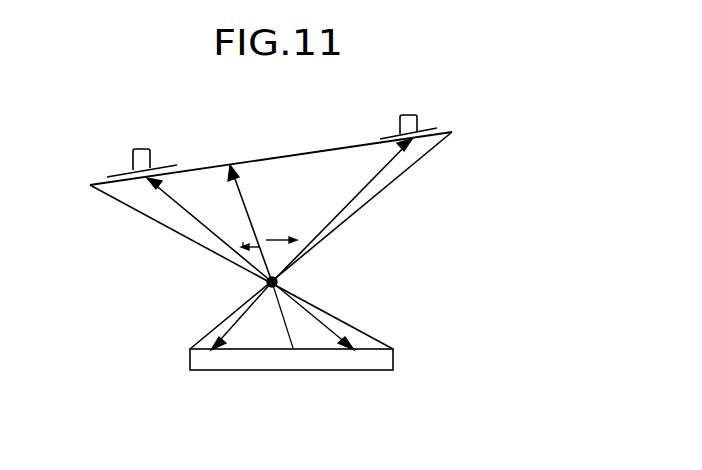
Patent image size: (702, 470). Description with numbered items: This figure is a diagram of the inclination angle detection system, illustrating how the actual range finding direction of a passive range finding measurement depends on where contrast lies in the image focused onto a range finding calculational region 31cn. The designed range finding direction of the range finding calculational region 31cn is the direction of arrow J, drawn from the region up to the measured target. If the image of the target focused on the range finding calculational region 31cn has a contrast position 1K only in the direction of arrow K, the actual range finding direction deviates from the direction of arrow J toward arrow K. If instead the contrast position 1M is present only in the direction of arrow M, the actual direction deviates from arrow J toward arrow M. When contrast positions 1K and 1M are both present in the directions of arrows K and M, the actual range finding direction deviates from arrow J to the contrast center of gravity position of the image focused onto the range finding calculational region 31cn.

The contrast position 1M is at (140, 149).
The contrast position 1K is at (410, 110).
The range finding calculational region 31cn is at (190, 362).
The arrow M is at (209, 230).
The arrow J is at (250, 223).
The arrow K is at (342, 210).